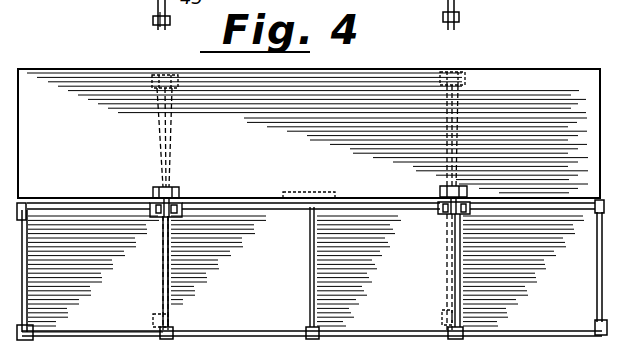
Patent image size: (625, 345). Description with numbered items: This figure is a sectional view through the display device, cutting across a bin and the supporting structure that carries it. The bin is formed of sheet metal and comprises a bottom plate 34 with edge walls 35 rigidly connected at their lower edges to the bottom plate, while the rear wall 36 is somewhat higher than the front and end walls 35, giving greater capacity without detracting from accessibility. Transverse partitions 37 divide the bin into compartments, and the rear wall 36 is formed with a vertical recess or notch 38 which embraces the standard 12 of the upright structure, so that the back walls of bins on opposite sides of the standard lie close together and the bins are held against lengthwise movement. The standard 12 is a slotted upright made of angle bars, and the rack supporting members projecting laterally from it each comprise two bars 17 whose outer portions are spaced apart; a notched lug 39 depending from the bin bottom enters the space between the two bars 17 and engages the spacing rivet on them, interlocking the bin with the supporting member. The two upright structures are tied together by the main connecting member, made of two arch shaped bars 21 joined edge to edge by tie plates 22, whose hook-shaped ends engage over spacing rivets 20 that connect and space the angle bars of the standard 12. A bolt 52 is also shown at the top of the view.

The standard 12 is at (173, 196).
The bars 17 is at (170, 134).
The spacing rivets 20 is at (420, 195).
The arch shaped bars 21 is at (251, 200).
The tie plates 22 is at (314, 192).
The bottom plate 34 is at (336, 271).
The edge walls 35 is at (70, 328).
The rear wall 36 is at (140, 216).
The transverse partitions 37 is at (195, 271).
The vertical recess 38 is at (180, 215).
The notched lug 39 is at (155, 321).
The bolt 52 is at (157, 22).